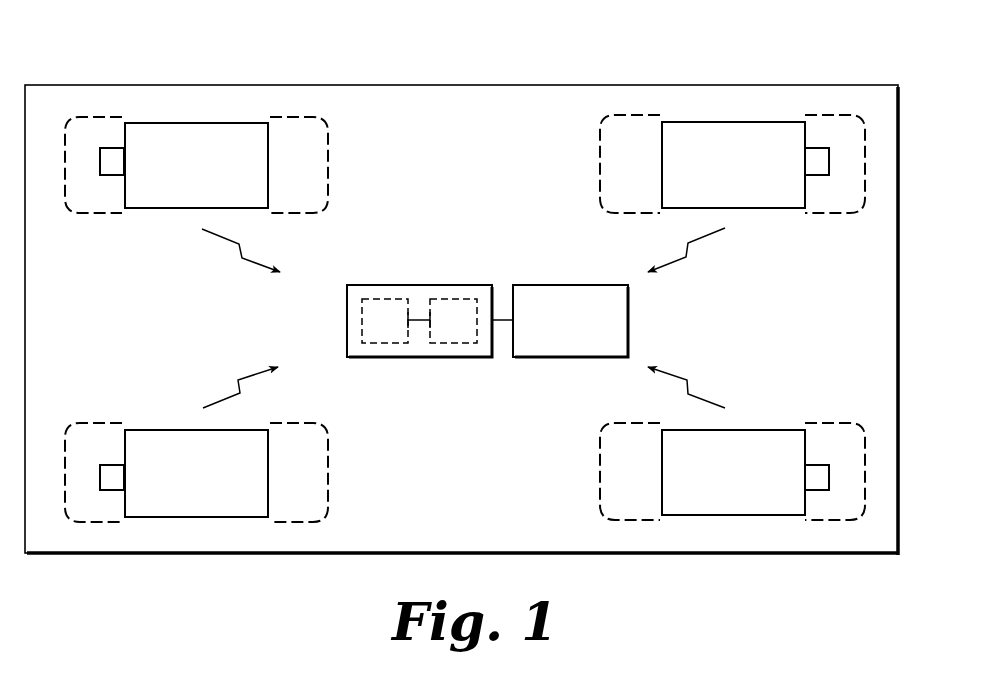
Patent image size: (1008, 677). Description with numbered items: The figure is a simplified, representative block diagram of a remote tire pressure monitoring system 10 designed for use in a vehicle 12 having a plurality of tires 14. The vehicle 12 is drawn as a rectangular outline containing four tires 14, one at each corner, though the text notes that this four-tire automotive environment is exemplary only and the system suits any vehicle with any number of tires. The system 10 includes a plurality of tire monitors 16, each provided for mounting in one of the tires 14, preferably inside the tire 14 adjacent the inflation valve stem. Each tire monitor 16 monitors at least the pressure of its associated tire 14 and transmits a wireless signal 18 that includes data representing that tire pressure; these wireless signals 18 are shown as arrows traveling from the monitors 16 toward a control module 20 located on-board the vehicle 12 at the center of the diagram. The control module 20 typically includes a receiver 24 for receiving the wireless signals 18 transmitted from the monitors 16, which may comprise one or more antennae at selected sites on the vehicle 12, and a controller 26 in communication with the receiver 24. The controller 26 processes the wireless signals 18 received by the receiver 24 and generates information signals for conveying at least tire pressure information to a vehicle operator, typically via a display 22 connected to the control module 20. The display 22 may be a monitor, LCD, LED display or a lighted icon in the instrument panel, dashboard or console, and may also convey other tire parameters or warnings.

The remote tire pressure monitoring system 10 is at (785, 55).
The vehicle 12 is at (475, 85).
The tire 14 is at (328, 158).
The tire monitor 16 is at (112, 175).
The wireless signal 18 is at (225, 261).
The control module 20 is at (433, 357).
The display 22 is at (630, 322).
The receiver 24 is at (383, 298).
The controller 26 is at (458, 298).